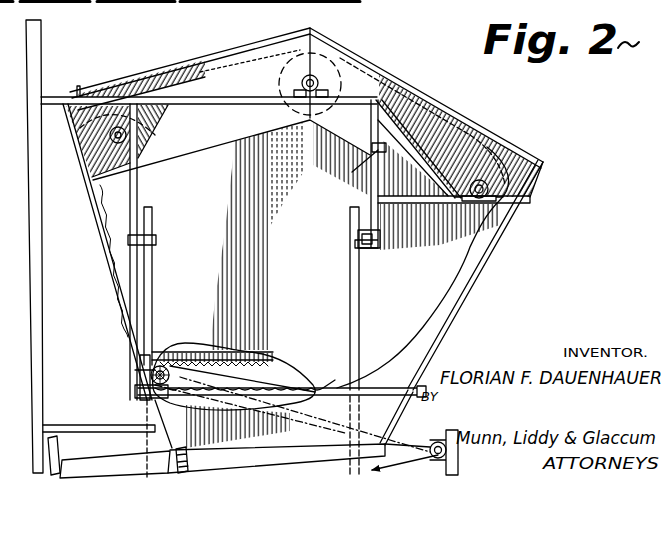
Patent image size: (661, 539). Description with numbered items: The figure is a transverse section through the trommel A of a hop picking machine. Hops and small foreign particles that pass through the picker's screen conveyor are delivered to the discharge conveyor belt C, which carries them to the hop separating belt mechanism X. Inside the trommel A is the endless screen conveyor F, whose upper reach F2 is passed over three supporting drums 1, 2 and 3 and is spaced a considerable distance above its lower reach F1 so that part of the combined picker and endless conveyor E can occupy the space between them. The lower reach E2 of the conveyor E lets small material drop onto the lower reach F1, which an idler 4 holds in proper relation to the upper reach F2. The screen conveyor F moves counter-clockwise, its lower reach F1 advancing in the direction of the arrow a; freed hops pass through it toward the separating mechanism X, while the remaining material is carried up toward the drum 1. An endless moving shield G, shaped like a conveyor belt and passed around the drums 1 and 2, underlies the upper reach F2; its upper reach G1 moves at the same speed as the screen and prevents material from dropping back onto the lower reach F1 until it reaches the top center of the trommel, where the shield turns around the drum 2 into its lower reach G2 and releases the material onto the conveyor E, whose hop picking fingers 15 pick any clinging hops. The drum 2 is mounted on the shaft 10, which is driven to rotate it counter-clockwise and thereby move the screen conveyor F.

The shaft 10 is at (312, 80).
The supporting drum 2 is at (345, 70).
The trommel A is at (412, 80).
The upper reach of the endless screen conveyor F2 is at (461, 110).
The upper reach of the moving shield G1 is at (470, 140).
The lower reach of the moving shield G2 is at (339, 141).
The endless moving shield G is at (359, 168).
The supporting drum 1 is at (445, 222).
The supporting drum 3 is at (150, 138).
The combined picker and endless conveyor E is at (252, 354).
The idler 4 is at (190, 353).
The hop picking fingers 15 is at (216, 369).
The lower reach of the combined picker and endless conveyor E2 is at (281, 369).
The endless screen conveyor F is at (410, 333).
The lower reach of the endless screen conveyor F1 is at (192, 405).
The arrow a is at (329, 400).
The hop separating belt mechanism X is at (243, 468).
The discharge conveyor belt C is at (70, 458).